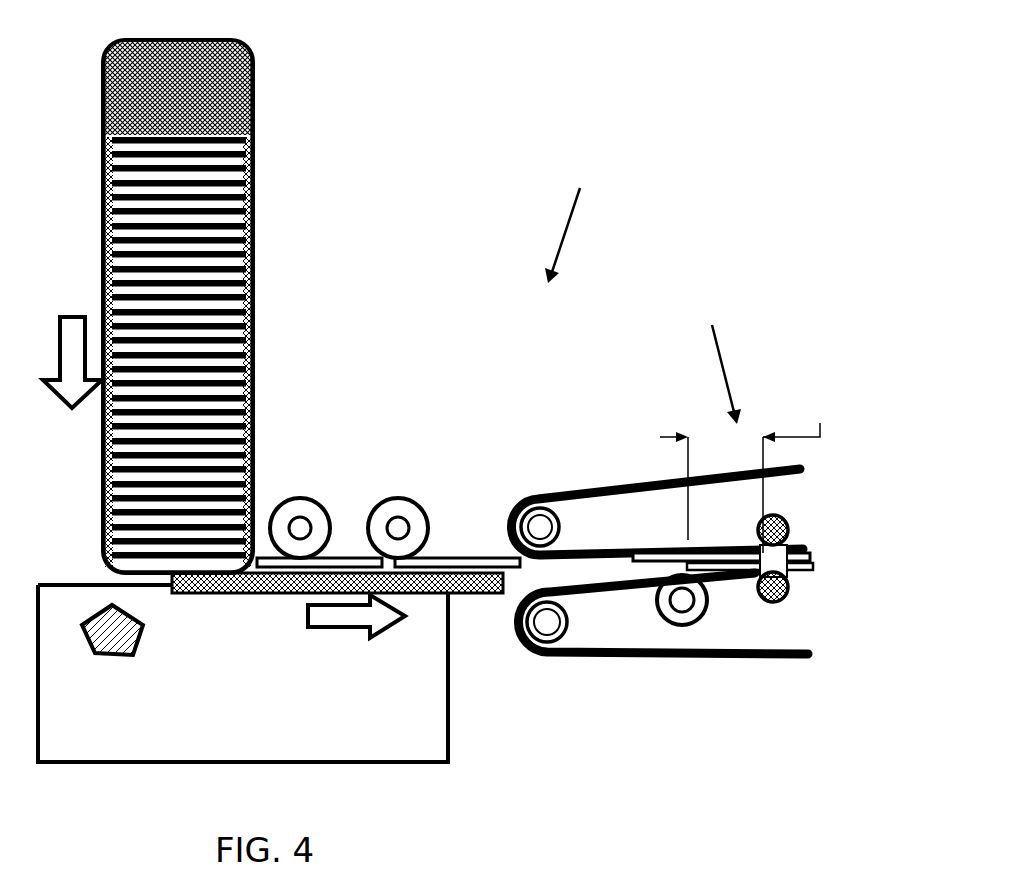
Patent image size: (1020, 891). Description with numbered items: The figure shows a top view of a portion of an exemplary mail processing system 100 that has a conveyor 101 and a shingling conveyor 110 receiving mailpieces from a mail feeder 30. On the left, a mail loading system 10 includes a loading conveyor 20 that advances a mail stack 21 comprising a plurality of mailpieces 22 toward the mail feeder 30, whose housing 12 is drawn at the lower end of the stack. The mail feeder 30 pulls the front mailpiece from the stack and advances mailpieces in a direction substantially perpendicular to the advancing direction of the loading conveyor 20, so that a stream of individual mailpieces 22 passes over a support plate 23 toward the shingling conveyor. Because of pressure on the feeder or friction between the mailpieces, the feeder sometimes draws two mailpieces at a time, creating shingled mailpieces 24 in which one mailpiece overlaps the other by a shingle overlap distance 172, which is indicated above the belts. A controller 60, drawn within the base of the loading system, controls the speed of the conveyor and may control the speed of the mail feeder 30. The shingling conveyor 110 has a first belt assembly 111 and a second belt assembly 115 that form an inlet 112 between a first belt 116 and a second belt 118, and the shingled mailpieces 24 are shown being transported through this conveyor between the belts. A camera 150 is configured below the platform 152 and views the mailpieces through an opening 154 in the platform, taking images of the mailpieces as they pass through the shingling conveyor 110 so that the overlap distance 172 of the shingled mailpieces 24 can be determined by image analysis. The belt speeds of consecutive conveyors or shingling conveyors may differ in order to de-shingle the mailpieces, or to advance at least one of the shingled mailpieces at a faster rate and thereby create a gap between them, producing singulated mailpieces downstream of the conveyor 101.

The mail loading system 10 is at (243, 42).
The loading conveyor 20 is at (254, 100).
The mail stack 21 is at (254, 291).
The mailpiece 22 is at (254, 187).
The cartridge housing 12 is at (255, 380).
The support plate 23 is at (359, 558).
The shingled mailpieces 24 is at (439, 558).
The mail feeder 30 is at (405, 595).
The controller 60 is at (106, 650).
The mail processing system 100 is at (577, 223).
The conveyor 101 is at (714, 360).
The shingling conveyor 110 is at (606, 487).
The first belt assembly 111 is at (513, 495).
The inlet 112 is at (563, 573).
The second belt assembly 115 is at (575, 658).
The first belt 116 is at (642, 482).
The second belt 118 is at (678, 658).
The camera 150 is at (805, 548).
The platform 152 is at (500, 634).
The opening 154 is at (783, 518).
The shingle overlap distance 172 is at (745, 476).